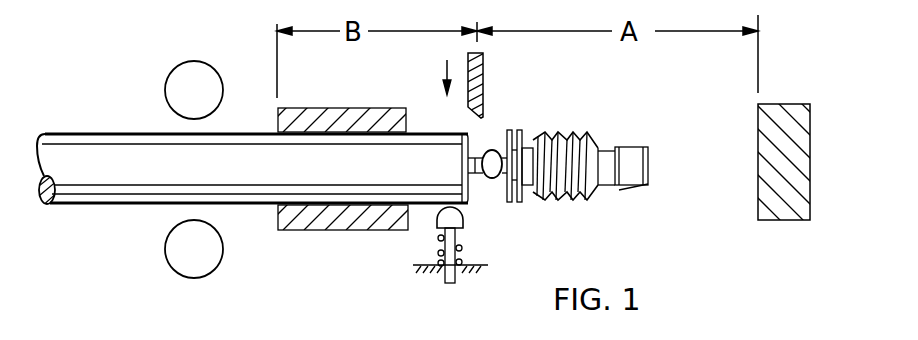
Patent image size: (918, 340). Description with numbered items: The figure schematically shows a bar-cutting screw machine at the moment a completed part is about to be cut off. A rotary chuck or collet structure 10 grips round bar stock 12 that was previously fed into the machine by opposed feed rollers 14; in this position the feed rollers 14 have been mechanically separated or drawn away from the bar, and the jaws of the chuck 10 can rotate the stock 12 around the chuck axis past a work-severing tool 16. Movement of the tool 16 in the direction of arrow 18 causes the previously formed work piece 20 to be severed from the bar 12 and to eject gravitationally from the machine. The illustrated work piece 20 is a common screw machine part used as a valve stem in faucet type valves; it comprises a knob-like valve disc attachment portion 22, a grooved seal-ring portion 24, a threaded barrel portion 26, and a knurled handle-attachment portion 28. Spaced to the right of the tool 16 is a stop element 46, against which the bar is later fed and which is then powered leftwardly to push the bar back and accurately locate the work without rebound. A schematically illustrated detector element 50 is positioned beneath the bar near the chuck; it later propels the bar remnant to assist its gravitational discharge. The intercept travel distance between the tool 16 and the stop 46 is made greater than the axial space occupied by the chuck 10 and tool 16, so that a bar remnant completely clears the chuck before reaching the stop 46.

The rotary chuck or collet structure 10 is at (338, 108).
The round bar stock 12 is at (92, 206).
The feed rollers 14 is at (167, 100).
The work-severing tool 16 is at (485, 72).
The arrow 18 is at (446, 72).
The work piece 20 is at (612, 114).
The knob-like valve disc attachment portion 22 is at (490, 148).
The grooved seal-ring portion 24 is at (517, 203).
The threaded barrel portion 26 is at (594, 198).
The knurled handle-attachment portion 28 is at (639, 188).
The stop element 46 is at (812, 208).
The detector element 50 is at (437, 224).